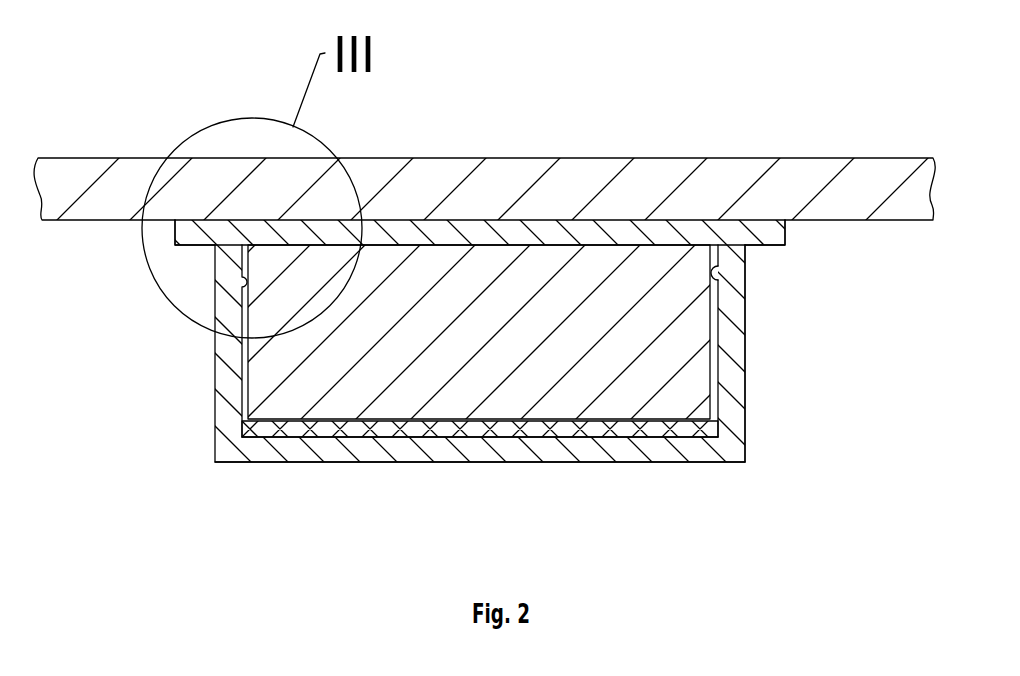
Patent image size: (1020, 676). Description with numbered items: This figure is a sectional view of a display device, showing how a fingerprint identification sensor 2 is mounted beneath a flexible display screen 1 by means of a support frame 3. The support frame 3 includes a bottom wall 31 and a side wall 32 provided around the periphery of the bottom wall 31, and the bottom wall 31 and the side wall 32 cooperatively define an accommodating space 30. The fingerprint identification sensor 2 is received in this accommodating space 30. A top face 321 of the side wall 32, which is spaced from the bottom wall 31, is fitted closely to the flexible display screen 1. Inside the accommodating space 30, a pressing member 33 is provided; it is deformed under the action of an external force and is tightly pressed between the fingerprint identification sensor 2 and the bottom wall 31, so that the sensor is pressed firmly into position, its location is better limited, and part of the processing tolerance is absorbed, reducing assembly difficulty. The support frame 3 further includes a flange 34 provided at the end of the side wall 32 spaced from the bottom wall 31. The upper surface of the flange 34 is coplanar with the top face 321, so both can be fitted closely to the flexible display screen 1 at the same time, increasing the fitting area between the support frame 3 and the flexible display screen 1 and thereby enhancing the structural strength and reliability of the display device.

The flexible display screen 1 is at (793, 183).
The fingerprint identification sensor 2 is at (474, 275).
The support frame 3 is at (938, 360).
The accommodating space 30 is at (243, 402).
The bottom wall 31 is at (660, 448).
The side wall 32 is at (735, 372).
The top face 321 is at (743, 253).
The pressing member 33 is at (413, 427).
The flange 34 is at (757, 224).